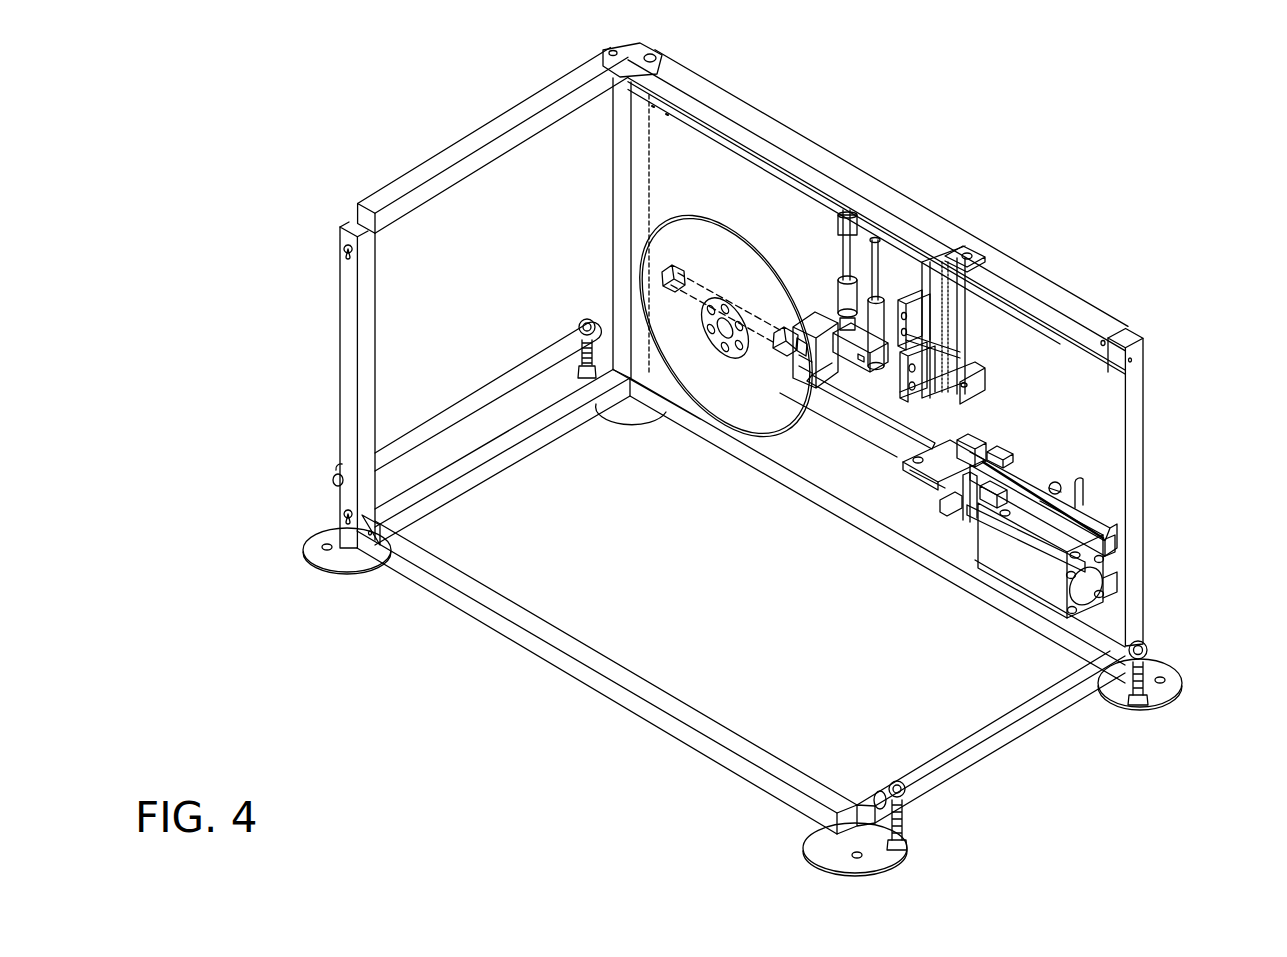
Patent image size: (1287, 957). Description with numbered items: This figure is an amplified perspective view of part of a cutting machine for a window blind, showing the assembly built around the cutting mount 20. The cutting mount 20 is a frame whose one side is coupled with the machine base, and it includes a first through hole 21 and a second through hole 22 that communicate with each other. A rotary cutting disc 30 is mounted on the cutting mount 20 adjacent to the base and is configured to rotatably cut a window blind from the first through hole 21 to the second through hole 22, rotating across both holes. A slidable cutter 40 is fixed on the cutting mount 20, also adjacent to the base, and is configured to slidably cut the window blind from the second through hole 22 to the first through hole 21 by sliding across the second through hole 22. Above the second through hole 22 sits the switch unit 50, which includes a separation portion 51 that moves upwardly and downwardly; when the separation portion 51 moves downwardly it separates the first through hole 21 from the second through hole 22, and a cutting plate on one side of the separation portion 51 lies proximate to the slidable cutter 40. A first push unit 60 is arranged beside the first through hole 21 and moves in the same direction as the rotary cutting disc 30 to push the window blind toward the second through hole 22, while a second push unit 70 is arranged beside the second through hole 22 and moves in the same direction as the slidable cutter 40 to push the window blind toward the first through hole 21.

The cutting mount 20 is at (1137, 432).
The first through hole 21 is at (862, 371).
The second through hole 22 is at (927, 410).
The rotary cutting disc 30 is at (742, 398).
The slidable cutter 40 is at (962, 508).
The switch unit 50 is at (942, 305).
The separation portion 51 is at (876, 400).
The first push unit 60 is at (831, 332).
The second push unit 70 is at (952, 488).